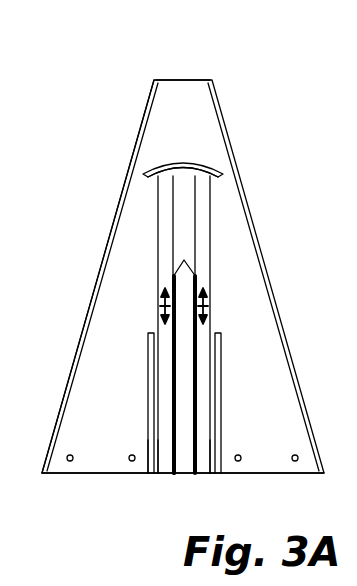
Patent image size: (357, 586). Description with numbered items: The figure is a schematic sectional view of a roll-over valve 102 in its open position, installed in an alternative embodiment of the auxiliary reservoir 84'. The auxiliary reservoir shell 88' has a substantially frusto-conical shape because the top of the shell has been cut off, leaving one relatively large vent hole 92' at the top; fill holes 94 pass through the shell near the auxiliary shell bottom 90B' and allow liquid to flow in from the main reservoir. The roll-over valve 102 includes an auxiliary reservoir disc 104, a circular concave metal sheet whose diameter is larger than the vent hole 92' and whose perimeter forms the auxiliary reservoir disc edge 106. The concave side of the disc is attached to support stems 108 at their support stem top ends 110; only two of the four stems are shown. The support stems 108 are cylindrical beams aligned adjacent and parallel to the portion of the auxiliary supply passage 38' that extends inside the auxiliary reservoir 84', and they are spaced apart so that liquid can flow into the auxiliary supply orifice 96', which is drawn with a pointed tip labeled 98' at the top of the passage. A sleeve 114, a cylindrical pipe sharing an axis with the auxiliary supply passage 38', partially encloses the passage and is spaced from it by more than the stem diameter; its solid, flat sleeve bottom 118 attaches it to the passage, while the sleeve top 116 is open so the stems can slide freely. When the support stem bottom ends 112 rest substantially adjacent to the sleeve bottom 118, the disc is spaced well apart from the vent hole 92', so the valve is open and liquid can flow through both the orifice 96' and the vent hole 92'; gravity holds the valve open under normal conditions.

The roll-over valve 102 is at (136, 63).
The vent hole 92' is at (193, 60).
The auxiliary reservoir 84' is at (183, 276).
The auxiliary reservoir disc 104 is at (188, 162).
The auxiliary reservoir disc edge 106 is at (221, 168).
The support stem top ends 110 is at (198, 167).
The support stems 108 is at (170, 208).
The valve tip 98' is at (229, 245).
The auxiliary supply orifice 96' is at (239, 372).
The auxiliary reservoir shell 88' is at (88, 276).
The sleeve top 116 is at (218, 333).
The sleeve 114 is at (216, 356).
The auxiliary supply passage 38' is at (223, 425).
The sleeve bottom 118 is at (147, 470).
The support stem bottom ends 112 is at (163, 470).
The auxiliary shell bottom 90B' is at (173, 491).
The fill holes 94 is at (295, 461).